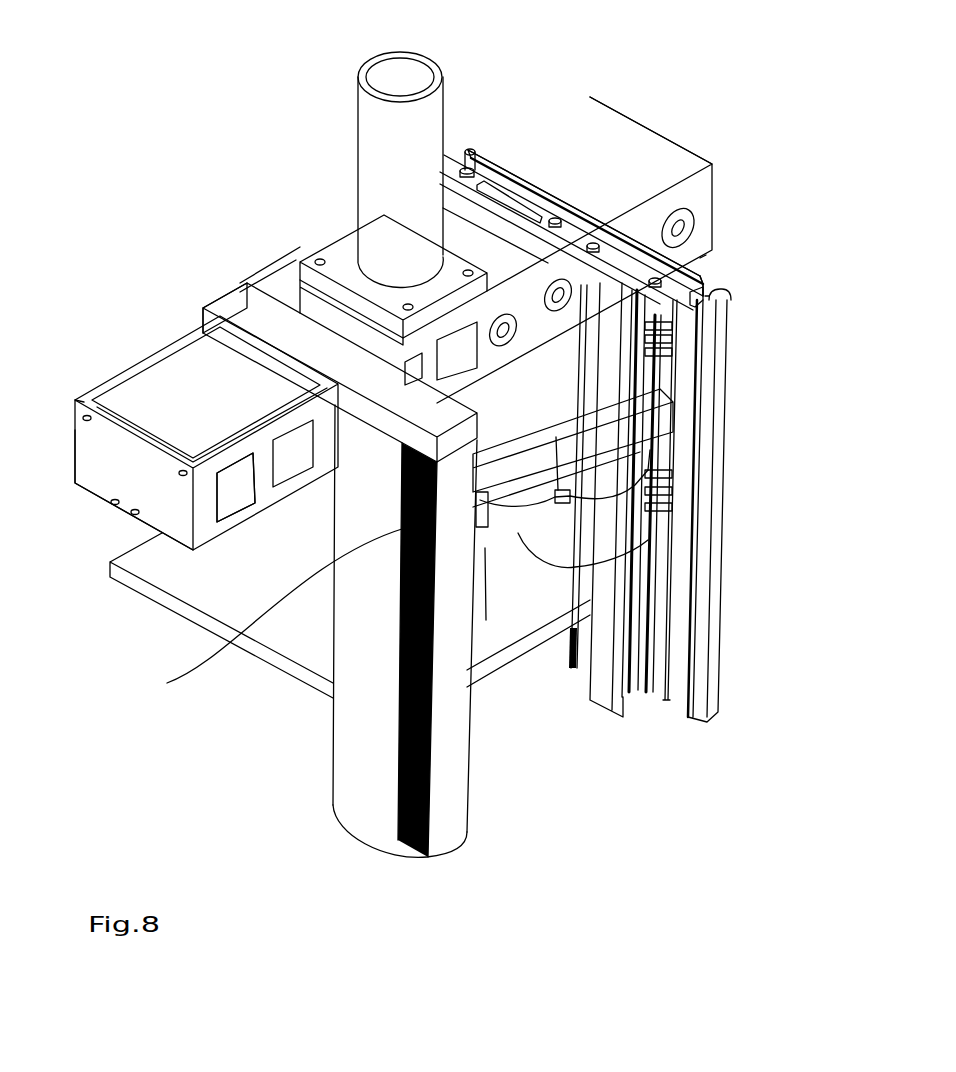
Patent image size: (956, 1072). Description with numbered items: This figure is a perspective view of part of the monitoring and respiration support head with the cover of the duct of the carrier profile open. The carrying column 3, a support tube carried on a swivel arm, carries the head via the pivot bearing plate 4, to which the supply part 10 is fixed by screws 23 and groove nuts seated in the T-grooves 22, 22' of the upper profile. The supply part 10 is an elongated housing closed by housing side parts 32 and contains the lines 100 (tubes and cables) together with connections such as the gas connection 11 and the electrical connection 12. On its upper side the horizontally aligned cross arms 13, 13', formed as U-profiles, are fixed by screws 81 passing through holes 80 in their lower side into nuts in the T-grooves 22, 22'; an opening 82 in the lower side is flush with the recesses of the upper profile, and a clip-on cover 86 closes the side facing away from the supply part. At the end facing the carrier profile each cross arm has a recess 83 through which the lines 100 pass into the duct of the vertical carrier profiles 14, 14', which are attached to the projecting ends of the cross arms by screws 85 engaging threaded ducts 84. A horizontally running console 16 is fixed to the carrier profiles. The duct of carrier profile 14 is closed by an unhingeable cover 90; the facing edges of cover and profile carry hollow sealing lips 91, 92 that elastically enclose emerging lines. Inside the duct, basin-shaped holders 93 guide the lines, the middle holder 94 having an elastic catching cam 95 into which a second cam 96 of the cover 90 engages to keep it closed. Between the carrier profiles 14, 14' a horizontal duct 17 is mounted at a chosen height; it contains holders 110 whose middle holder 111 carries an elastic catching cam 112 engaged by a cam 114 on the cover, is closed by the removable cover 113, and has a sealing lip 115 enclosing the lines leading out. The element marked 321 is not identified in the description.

The carrying column 3 is at (363, 139).
The pivot bearing plate 4 is at (338, 243).
The screw 23 is at (337, 238).
The cross arm 13 is at (325, 346).
The cover 86 is at (202, 308).
The supply part 10 is at (114, 365).
The housing side part 32 is at (93, 478).
The electrical connection 12 is at (237, 503).
The cam 114 is at (274, 620).
The console 16 is at (256, 652).
The carrier profile 14 is at (367, 631).
The sealing lip 115 is at (485, 548).
The lines 100 is at (548, 548).
The carrier profile 14' is at (582, 515).
The hollow sealing lip 91 is at (623, 705).
The hollow sealing lip 92 is at (700, 672).
The holder 93 is at (660, 515).
The elastic catching cam 95 is at (660, 500).
The cover 90 is at (715, 492).
The middle holder 94 is at (660, 486).
The elastic catching cam 112 is at (660, 466).
The horizontal duct 17 is at (670, 387).
The middle holder 111 is at (556, 437).
The cover 113 is at (507, 470).
The holders 110 is at (530, 500).
The opening 82 is at (496, 205).
The hole 80 is at (463, 165).
The screw 81 is at (470, 150).
The cross arm 13' is at (584, 174).
The T-groove 22 is at (571, 181).
The rail end 321 is at (592, 210).
The T-groove 22' is at (668, 118).
The gas connection 11 is at (693, 227).
The screw 85 is at (707, 260).
The threaded duct 84 is at (697, 280).
The second cam 96 is at (722, 296).
The recess 83 is at (732, 307).